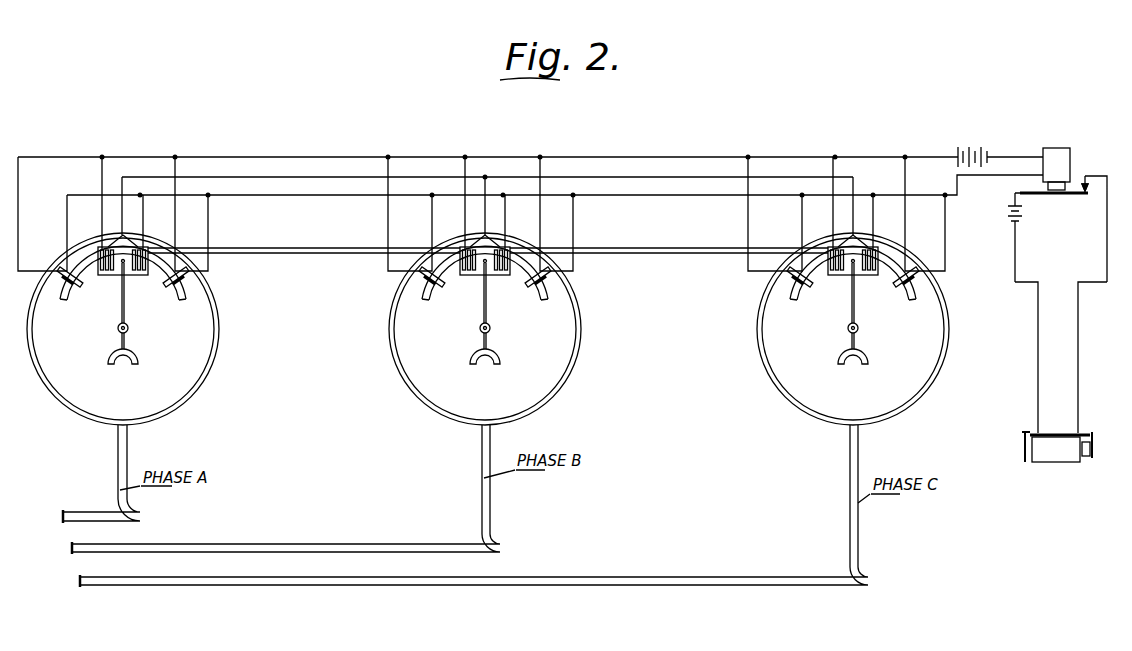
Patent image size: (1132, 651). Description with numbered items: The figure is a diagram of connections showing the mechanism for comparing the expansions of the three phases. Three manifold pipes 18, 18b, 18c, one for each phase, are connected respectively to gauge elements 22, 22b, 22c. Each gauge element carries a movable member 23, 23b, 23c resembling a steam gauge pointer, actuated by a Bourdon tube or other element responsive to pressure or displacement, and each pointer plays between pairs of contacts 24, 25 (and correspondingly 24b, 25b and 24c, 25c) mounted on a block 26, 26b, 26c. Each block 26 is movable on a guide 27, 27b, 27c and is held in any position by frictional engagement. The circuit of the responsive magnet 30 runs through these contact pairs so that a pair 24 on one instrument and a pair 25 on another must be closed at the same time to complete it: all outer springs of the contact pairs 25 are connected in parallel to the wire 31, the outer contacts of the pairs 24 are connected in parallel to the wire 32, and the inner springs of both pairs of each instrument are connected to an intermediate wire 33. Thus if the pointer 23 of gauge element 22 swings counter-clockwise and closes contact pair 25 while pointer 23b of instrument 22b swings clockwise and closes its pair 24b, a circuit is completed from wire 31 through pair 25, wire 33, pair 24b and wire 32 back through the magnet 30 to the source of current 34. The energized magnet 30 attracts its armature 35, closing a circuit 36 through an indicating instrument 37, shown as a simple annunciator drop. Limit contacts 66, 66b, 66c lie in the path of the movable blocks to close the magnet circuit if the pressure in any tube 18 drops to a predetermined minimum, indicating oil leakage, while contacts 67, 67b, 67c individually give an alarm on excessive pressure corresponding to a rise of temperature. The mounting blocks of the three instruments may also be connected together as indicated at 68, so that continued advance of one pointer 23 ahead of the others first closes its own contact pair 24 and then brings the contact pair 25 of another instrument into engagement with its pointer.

The manifold pipe 18 is at (127, 507).
The manifold pipe 18b is at (490, 517).
The manifold pipe 18c is at (857, 527).
The gauge element 22 is at (77, 388).
The gauge element 22b is at (504, 329).
The gauge element 22c is at (872, 329).
The movable member 23 is at (135, 312).
The pointer 23b is at (502, 312).
The pointer 23c is at (871, 312).
The contact pair 24 is at (151, 241).
The contact pair 24b is at (517, 241).
The contact pair 24c is at (885, 241).
The contact pair 25 is at (73, 247).
The contact pair 25b is at (434, 247).
The contact pair 25c is at (803, 247).
The block 26 is at (111, 273).
The block 26b is at (472, 273).
The block 26c is at (840, 278).
The guide 27 is at (62, 298).
The guide 27b is at (527, 277).
The guide 27c is at (892, 279).
The responsive magnet 30 is at (1052, 148).
The wire 31 is at (933, 157).
The wire 32 is at (959, 190).
The intermediate wire 33 is at (283, 178).
The source of current 34 is at (985, 150).
The armature 35 is at (1068, 196).
The circuit 36 is at (1080, 370).
The indicating instrument 37 is at (1057, 460).
The limit contact 66 is at (43, 287).
The limit contact 66b is at (403, 284).
The limit contact 66c is at (763, 284).
The limit contact 67 is at (215, 277).
The limit contact 67b is at (581, 277).
The limit contact 67c is at (941, 278).
The connection 68 is at (318, 247).